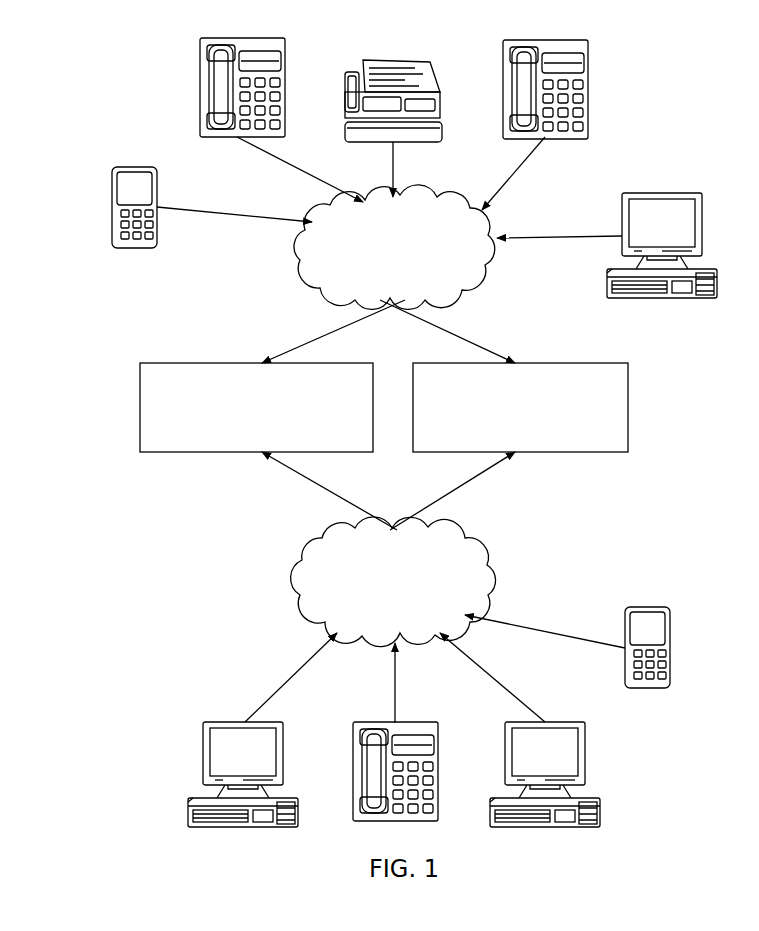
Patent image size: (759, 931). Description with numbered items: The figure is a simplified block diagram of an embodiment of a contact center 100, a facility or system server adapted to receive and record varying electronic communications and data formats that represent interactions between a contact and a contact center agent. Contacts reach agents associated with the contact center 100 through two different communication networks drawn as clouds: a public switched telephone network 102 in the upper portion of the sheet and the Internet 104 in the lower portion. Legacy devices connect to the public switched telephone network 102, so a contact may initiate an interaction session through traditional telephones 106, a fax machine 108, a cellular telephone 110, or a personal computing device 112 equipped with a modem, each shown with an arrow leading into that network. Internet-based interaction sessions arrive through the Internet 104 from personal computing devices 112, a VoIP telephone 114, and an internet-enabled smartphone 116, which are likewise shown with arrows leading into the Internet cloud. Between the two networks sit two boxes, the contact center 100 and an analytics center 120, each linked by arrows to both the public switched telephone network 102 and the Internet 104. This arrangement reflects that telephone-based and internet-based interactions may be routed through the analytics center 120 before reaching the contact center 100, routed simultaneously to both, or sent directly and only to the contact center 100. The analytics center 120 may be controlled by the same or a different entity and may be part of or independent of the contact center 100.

The contact center 100 is at (140, 389).
The public switched telephone network 102 is at (300, 243).
The Internet 104 is at (490, 556).
The traditional telephone 106 is at (200, 76).
The fax machine 108 is at (394, 60).
The cellular telephone 110 is at (112, 195).
The personal computing device 112 is at (663, 193).
The VoIP telephone 114 is at (353, 748).
The internet-enabled smartphone 116 is at (637, 607).
The analytics center 120 is at (628, 410).